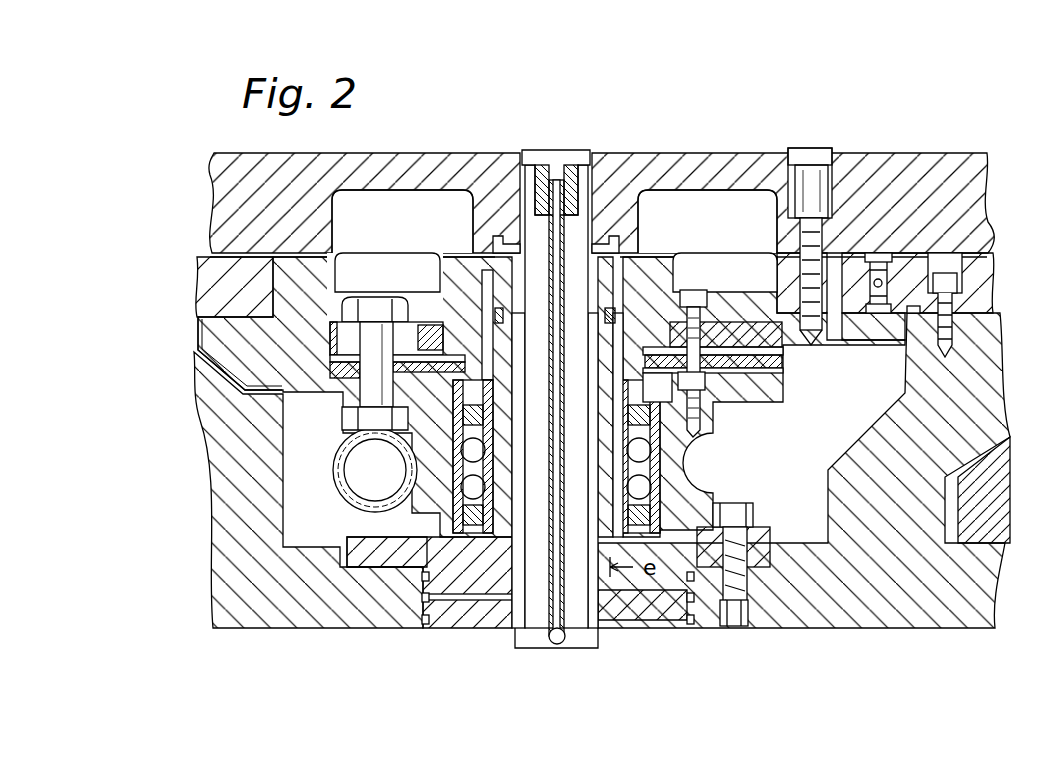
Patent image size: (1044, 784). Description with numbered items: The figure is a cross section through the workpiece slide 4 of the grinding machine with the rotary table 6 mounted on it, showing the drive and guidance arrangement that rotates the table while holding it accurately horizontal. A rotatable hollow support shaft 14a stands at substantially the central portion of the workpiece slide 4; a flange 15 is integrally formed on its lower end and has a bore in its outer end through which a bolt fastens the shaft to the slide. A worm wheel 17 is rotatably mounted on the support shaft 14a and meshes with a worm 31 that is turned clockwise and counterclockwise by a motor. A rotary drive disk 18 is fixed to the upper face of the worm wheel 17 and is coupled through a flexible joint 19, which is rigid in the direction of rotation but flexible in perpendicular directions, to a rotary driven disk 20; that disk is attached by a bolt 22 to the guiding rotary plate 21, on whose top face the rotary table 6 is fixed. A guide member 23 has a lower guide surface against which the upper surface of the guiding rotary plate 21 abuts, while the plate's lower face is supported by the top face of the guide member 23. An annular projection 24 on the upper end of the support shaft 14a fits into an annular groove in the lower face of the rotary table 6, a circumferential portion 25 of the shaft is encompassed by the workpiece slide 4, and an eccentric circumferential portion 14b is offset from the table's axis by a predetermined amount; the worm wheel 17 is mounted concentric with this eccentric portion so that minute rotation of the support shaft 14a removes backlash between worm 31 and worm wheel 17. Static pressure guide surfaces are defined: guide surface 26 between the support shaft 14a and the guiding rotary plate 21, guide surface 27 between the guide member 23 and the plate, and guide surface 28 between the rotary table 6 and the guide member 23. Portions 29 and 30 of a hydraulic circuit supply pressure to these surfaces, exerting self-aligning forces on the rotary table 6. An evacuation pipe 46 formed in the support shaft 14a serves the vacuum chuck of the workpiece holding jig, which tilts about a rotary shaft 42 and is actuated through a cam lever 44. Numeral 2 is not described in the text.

The machine bed 2 is at (975, 518).
The workpiece slide 4 is at (308, 597).
The rotary table 6 is at (726, 158).
The support shaft 14a is at (478, 600).
The eccentric circumferential portion 14b is at (492, 540).
The flange 15 is at (375, 545).
The worm wheel 17 is at (402, 545).
The rotary drive disk 18 is at (380, 430).
The flexible joint 19 is at (333, 368).
The rotary driven disk 20 is at (427, 327).
The guiding rotary plate 21 is at (232, 366).
The bolt 22 is at (698, 285).
The guide member 23 is at (1005, 287).
The annular projection 24 is at (498, 236).
The circumferential portion 25 is at (415, 598).
The guide surface 26 is at (477, 332).
The guide surface 27 is at (218, 335).
The guide surface 28 is at (857, 250).
The hydraulic circuit portion 29 is at (512, 520).
The hydraulic circuit portion 30 is at (880, 282).
The worm 31 is at (350, 476).
The rotary shaft 42 is at (693, 545).
The cam lever 44 is at (758, 626).
The evacuation pipe 46 is at (588, 632).